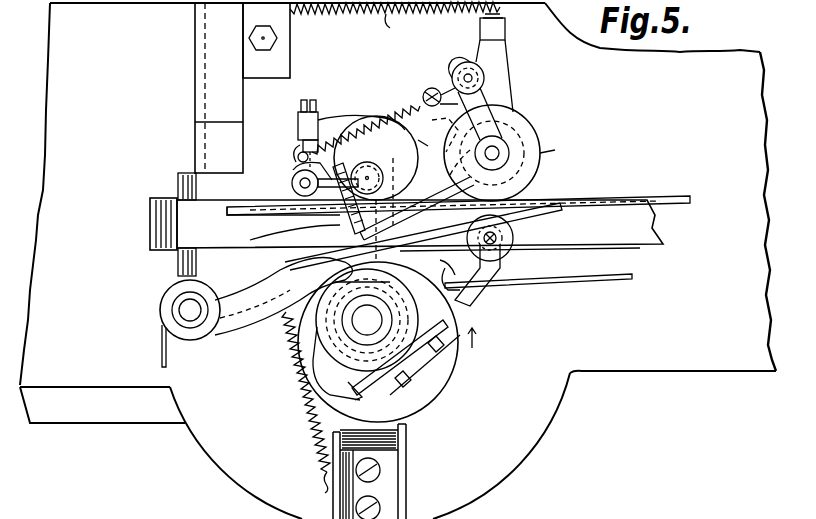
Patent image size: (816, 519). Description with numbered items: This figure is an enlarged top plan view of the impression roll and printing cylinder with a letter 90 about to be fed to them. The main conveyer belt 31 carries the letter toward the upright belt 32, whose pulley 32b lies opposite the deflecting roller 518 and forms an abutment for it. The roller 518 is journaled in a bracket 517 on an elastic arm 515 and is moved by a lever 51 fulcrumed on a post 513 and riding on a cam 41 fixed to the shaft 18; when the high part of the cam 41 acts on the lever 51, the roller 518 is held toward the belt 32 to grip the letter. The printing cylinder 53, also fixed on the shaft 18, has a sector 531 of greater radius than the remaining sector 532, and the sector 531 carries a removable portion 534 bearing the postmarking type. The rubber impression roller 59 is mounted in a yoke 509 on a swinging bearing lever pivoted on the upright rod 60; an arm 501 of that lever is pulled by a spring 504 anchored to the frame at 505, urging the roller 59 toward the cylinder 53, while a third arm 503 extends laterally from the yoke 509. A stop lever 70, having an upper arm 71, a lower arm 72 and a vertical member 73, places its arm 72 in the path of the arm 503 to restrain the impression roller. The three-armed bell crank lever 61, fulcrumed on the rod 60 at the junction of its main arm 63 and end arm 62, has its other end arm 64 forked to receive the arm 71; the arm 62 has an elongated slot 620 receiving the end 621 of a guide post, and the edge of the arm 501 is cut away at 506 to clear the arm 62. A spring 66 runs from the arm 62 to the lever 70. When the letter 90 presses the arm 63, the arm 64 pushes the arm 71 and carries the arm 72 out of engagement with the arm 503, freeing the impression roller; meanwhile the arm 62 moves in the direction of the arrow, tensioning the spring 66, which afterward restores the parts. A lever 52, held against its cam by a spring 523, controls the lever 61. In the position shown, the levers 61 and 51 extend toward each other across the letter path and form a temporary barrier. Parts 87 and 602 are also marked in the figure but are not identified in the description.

The shaft 18 is at (367, 320).
The belt 31 is at (406, 224).
The belt 32 is at (555, 198).
The pulley 32b is at (541, 152).
The cam 41 is at (303, 382).
The lever 51 is at (298, 260).
The lever 52 is at (243, 315).
The printing cylinder 53 is at (328, 345).
The impression roller 59 is at (300, 208).
The upright rod 60 is at (495, 152).
The bell crank lever 61 is at (417, 197).
The end-arm 62 is at (472, 120).
The main arm 63 is at (457, 158).
The end member 64 is at (340, 217).
The spring 66 is at (366, 121).
The lever 70 is at (296, 162).
The upper arm 71 is at (376, 188).
The lower arm 72 is at (302, 155).
The vertical member 73 is at (300, 185).
The pivot rod 87 is at (300, 250).
The letter 90 is at (684, 222).
The arm 501 is at (494, 63).
The third arm 503 is at (322, 118).
The spring 504 is at (406, 29).
The spring attachment 505 is at (292, 10).
The cut-away 506 is at (498, 70).
The yoke 509 is at (446, 125).
The post 513 is at (192, 312).
The arm 515 is at (611, 279).
The bracket 517 is at (590, 245).
The roller 518 is at (513, 236).
The spring 523 is at (305, 402).
The sector 531 is at (468, 312).
The sector 532 is at (414, 405).
The removable portion 534 is at (404, 360).
The pin 602 is at (426, 146).
The elongated slot 620 is at (452, 86).
The guide post end 621 is at (466, 70).